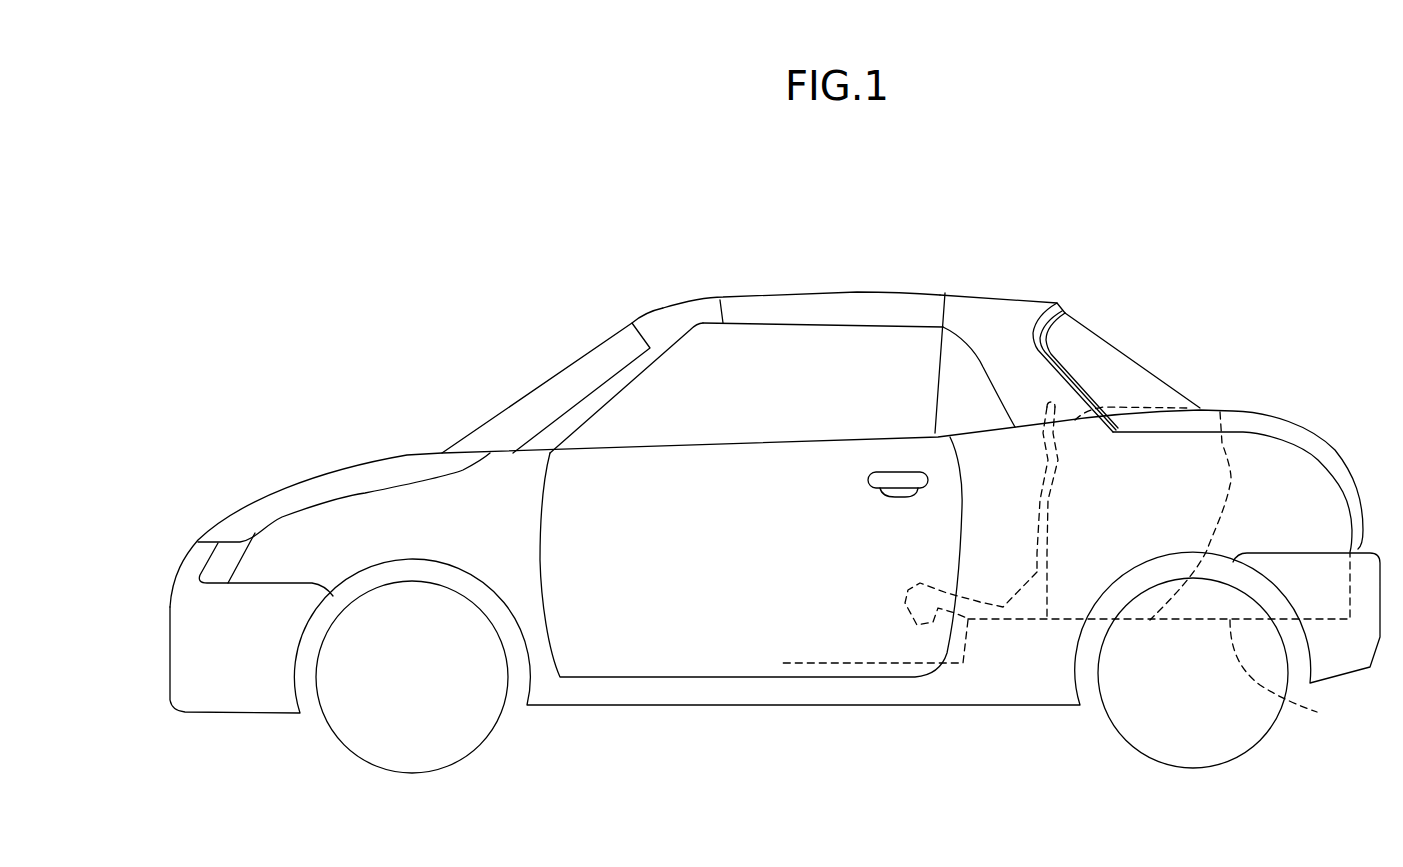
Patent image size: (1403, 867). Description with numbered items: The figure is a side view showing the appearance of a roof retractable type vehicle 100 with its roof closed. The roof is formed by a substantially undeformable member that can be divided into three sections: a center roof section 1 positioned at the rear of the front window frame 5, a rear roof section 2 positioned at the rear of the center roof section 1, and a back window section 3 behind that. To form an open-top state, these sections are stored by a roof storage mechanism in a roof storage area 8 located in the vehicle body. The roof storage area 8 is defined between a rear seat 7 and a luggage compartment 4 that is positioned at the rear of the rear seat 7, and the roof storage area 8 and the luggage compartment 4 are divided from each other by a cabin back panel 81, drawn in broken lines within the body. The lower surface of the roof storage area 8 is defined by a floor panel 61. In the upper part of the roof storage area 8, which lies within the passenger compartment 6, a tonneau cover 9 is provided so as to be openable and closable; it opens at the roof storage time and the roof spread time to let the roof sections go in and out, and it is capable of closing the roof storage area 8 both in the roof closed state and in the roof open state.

The roof retractable type vehicle 100 is at (501, 291).
The center roof section 1 is at (800, 298).
The rear roof section 2 is at (992, 308).
The back window section 3 is at (1113, 353).
The luggage compartment 4 is at (1297, 509).
The front window frame 5 is at (668, 316).
The passenger compartment 6 is at (797, 397).
The rear seat 7 is at (1033, 510).
The roof storage area 8 is at (1138, 518).
The tonneau cover 9 is at (1148, 403).
The cabin back panel 81 is at (1235, 435).
The floor panel 61 is at (1296, 683).